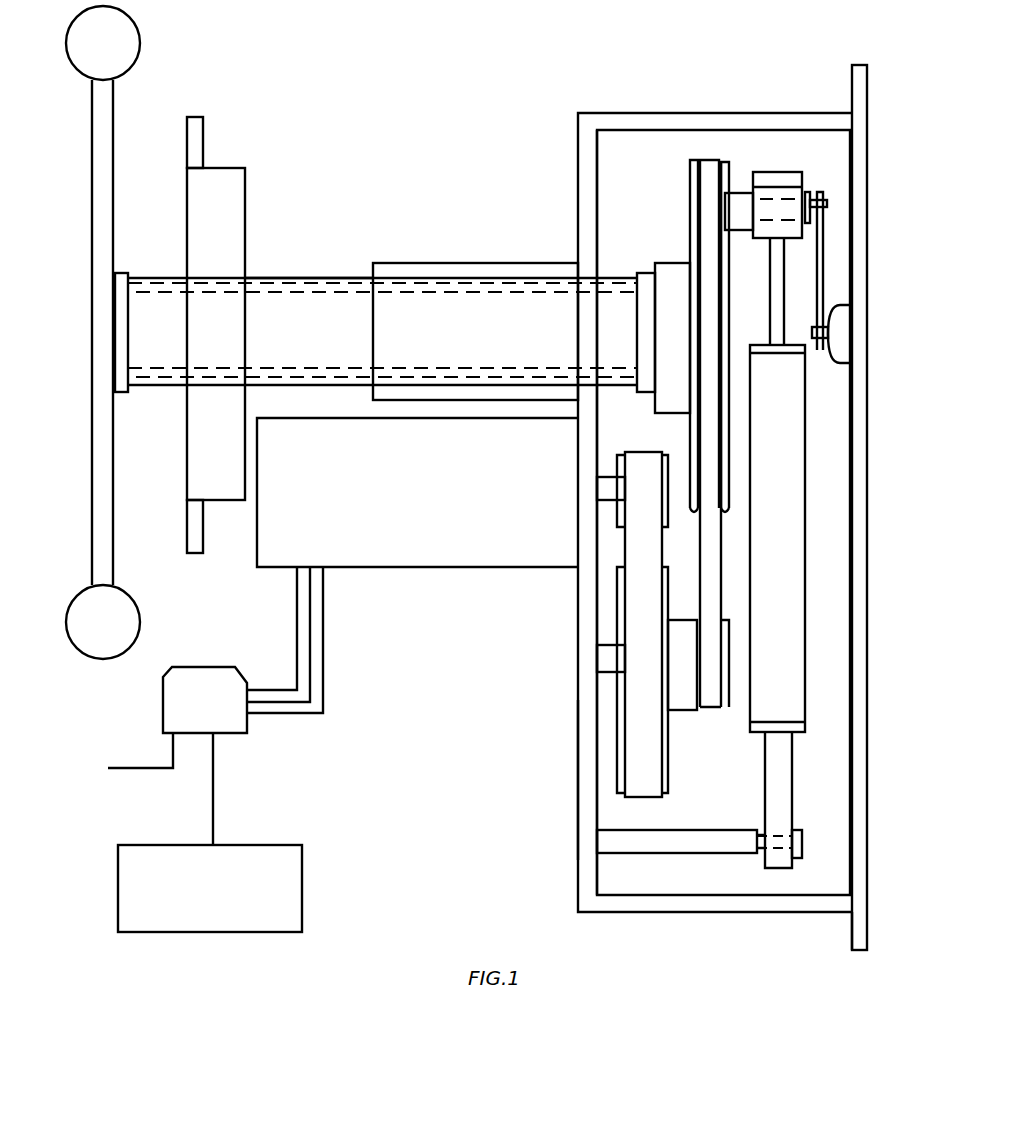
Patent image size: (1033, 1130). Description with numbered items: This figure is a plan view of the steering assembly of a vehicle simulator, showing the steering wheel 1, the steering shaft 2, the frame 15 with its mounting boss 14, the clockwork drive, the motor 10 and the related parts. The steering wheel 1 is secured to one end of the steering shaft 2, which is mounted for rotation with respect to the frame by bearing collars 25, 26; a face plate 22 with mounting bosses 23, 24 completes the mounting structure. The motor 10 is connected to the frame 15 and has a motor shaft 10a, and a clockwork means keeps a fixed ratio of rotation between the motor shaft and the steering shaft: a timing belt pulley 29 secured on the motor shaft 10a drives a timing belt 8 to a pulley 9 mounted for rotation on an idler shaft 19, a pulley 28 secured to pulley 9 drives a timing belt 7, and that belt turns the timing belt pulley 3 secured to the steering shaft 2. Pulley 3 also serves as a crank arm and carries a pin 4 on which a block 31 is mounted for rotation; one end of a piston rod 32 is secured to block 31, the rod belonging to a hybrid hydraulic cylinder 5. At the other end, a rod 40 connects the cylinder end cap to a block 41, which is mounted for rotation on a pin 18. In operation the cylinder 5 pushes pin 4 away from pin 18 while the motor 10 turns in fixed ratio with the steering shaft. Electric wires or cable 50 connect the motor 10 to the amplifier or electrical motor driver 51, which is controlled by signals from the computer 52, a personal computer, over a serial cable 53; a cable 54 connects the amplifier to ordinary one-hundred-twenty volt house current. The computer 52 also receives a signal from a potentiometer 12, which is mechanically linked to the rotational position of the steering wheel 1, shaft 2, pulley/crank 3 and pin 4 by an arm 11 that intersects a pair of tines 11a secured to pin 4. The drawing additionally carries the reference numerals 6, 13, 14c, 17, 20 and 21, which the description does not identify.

The steering wheel 1 is at (92, 522).
The steering shaft 2 is at (165, 306).
The timing belt pulley 3 is at (713, 287).
The pin 4 is at (763, 189).
The hybrid hydraulic cylinder 5 is at (808, 438).
The stop block 6 is at (805, 838).
The timing belt 7 is at (712, 442).
The timing belt 8 is at (646, 556).
The pulley 9 is at (668, 753).
The motor 10 is at (455, 548).
The motor shaft 10a is at (608, 488).
The arm 11 is at (834, 271).
The tines 11a is at (830, 197).
The potentiometer 12 is at (826, 352).
The frame 13 is at (870, 438).
The mounting boss 14 is at (868, 78).
The post lower end 14c is at (868, 933).
The frame 15 is at (668, 112).
The housing side wall 17 is at (578, 778).
The pin 18 is at (657, 852).
The idler shaft 19 is at (554, 786).
The bearing sleeve 20 is at (467, 262).
The shaft section 21 is at (318, 277).
The face plate 22 is at (245, 232).
The mounting boss 23 is at (203, 138).
The mounting boss 24 is at (203, 522).
The bearing collar 25 is at (122, 392).
The bearing collar 26 is at (645, 270).
The pulley 28 is at (730, 704).
The timing belt pulley 29 is at (618, 452).
The block 31 is at (823, 182).
The piston rod 32 is at (776, 308).
The rod 40 is at (792, 760).
The block 41 is at (792, 865).
The cable 50 is at (294, 603).
The amplifier 51 is at (163, 700).
The computer 52 is at (118, 893).
The cable 53 is at (213, 830).
The cable 54 is at (196, 752).